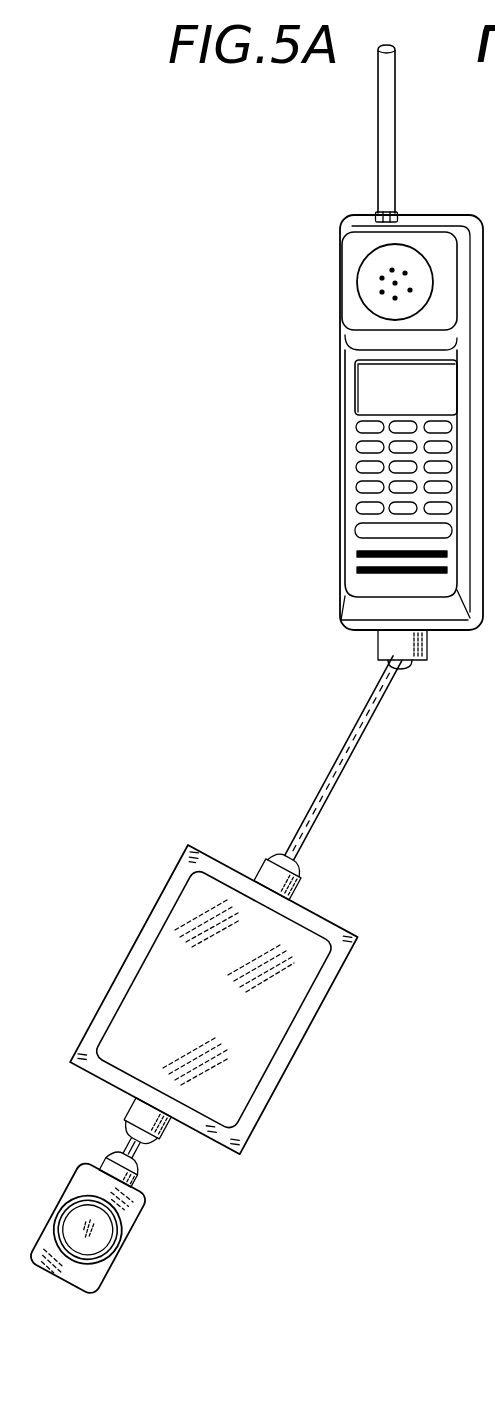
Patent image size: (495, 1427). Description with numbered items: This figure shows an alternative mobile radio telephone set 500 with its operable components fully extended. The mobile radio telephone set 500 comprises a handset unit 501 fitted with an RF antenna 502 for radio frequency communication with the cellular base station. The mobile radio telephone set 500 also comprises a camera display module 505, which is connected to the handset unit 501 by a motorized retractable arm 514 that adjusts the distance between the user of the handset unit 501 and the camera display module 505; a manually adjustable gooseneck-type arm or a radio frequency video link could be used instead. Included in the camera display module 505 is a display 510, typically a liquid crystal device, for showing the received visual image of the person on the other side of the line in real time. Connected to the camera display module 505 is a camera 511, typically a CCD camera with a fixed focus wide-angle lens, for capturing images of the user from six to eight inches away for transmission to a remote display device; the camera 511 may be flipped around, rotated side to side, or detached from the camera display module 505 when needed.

The mobile radio telephone set 500 is at (268, 138).
The handset unit 501 is at (340, 418).
The RF antenna 502 is at (378, 179).
The camera display module 505 is at (132, 955).
The display 510 is at (125, 1018).
The camera 511 is at (127, 1250).
The motorized retractable arm 514 is at (335, 768).